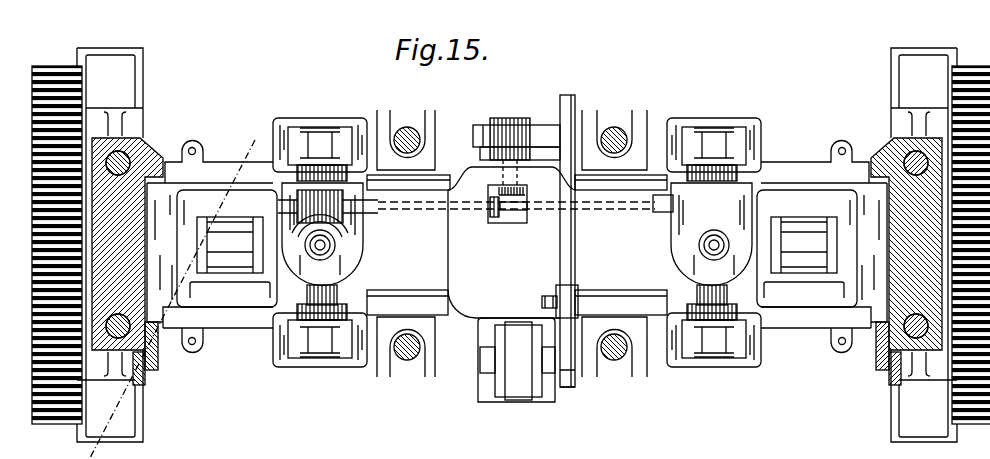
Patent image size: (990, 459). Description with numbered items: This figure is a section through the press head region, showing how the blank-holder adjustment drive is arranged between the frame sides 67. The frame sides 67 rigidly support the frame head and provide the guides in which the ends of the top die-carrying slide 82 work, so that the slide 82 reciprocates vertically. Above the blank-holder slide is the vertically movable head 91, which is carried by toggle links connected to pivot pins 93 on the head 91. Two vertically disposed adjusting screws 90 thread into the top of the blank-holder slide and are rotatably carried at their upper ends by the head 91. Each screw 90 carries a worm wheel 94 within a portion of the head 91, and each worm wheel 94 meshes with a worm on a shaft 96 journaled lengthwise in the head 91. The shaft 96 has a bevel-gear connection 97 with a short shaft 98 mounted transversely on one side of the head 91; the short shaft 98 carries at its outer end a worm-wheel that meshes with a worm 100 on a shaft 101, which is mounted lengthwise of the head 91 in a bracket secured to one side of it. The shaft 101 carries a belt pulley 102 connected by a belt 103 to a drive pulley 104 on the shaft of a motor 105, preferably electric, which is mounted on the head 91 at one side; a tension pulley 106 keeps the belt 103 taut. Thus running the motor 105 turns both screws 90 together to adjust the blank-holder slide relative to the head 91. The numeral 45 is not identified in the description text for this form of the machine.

The drive shaft 45 is at (278, 202).
The frame sides 67 is at (150, 152).
The top die-carrying slide 82 is at (233, 318).
The adjusting screws 90 is at (330, 250).
The vertically movable head 91 is at (517, 243).
The pivot pins 93 is at (718, 135).
The worm wheel 94 is at (337, 246).
The shaft 96 is at (345, 210).
The bevel-gear connection 97 is at (492, 207).
The short shaft 98 is at (496, 184).
The worm 100 is at (512, 125).
The shaft 101 is at (478, 136).
The belt pulley 102 is at (575, 100).
The belt 103 is at (569, 248).
The drive pulley 104 is at (576, 380).
The motor 105 is at (518, 390).
The tension pulley 106 is at (557, 301).